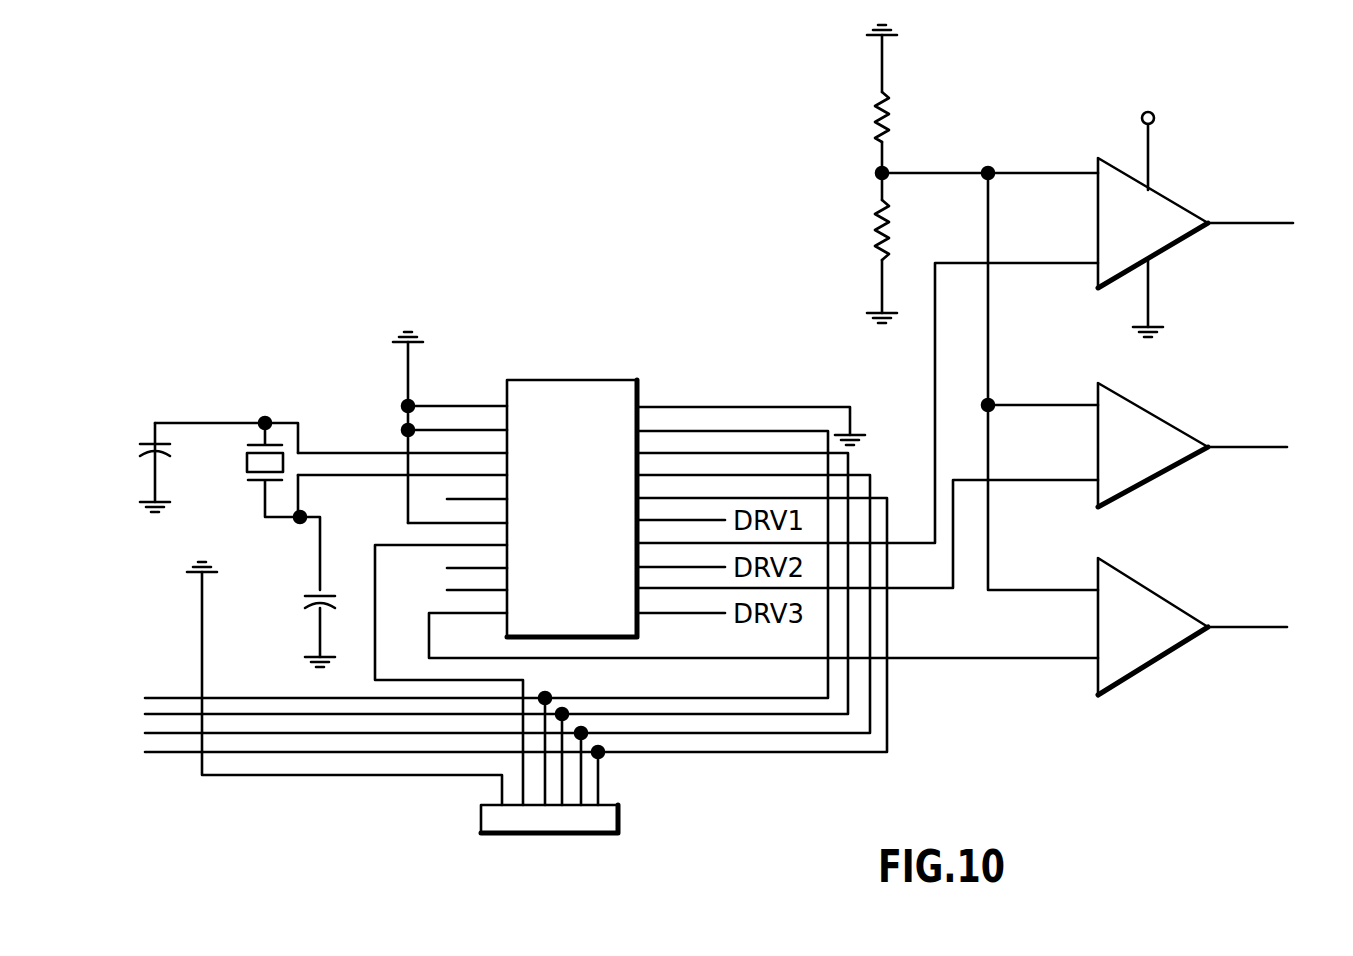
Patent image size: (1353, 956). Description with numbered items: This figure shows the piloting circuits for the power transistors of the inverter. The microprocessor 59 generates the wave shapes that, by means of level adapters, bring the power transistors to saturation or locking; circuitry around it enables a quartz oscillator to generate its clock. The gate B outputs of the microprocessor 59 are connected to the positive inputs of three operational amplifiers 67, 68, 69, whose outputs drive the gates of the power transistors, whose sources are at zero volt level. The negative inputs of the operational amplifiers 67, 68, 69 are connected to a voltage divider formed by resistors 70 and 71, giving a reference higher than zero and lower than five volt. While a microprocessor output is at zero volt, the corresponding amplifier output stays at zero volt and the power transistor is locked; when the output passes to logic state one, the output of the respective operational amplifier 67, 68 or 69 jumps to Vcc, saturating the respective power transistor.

The microprocessor 59 is at (582, 392).
The operational amplifier 67 is at (1150, 243).
The operational amplifier 68 is at (1152, 460).
The operational amplifier 69 is at (1160, 640).
The resistor 70 is at (870, 118).
The resistor 71 is at (868, 236).